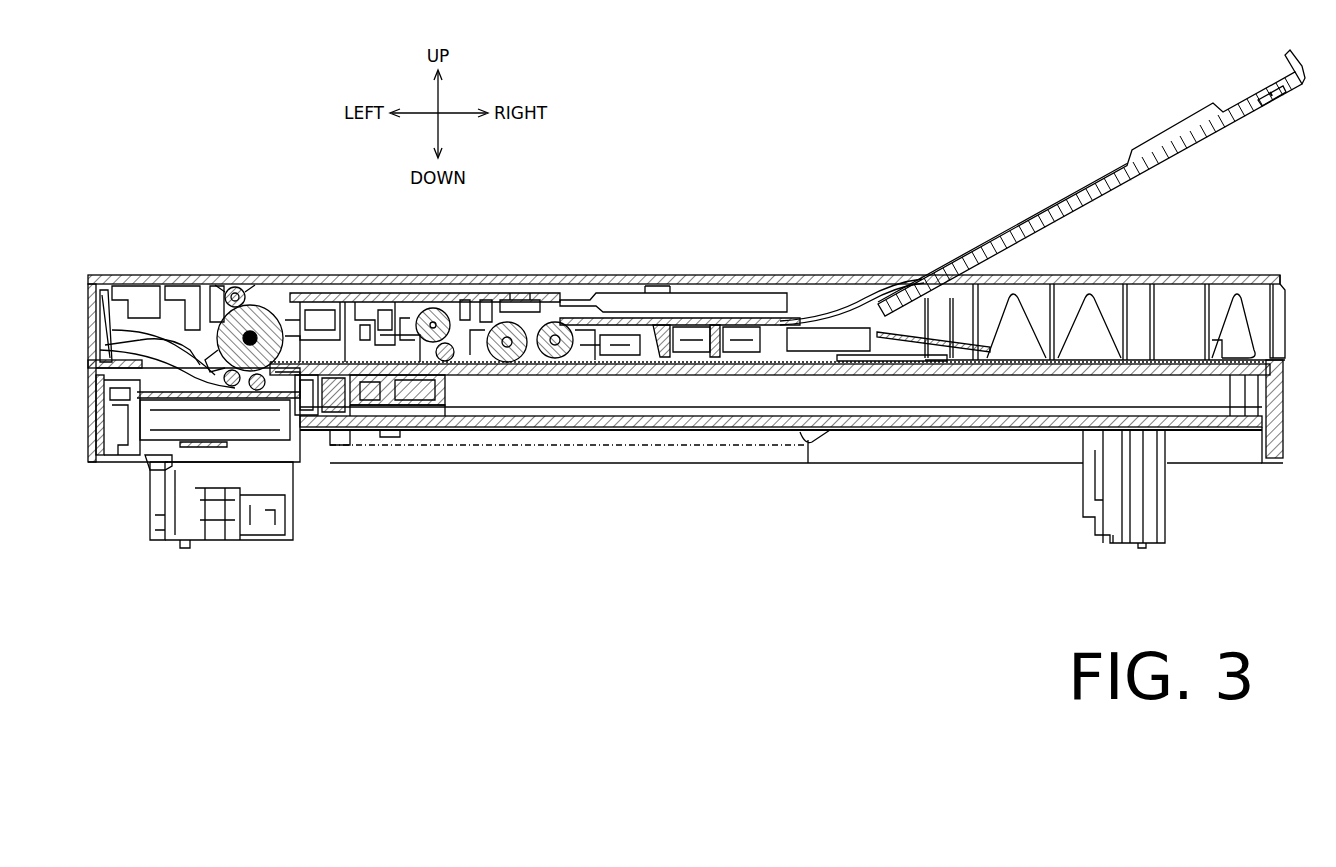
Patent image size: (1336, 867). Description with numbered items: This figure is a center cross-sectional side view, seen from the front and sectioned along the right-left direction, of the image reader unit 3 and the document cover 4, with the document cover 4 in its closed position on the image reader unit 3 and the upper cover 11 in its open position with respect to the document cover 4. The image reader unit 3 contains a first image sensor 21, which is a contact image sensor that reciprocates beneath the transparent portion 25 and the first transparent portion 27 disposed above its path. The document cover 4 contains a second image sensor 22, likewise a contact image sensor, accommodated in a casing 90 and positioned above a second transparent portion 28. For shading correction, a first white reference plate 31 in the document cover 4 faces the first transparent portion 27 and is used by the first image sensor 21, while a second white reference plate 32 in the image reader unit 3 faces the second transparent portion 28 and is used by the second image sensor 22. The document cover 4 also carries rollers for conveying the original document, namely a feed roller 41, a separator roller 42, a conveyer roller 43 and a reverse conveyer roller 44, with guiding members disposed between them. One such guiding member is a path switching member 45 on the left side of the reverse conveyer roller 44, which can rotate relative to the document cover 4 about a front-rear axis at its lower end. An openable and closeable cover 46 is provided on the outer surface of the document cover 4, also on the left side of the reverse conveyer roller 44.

The image reader unit 3 is at (1240, 452).
The document cover 4 is at (1152, 278).
The upper cover 11 is at (1082, 190).
The first image sensor 21 is at (390, 432).
The second image sensor 22 is at (322, 278).
The transparent portion 25 is at (665, 376).
The first transparent portion 27 is at (360, 412).
The second transparent portion 28 is at (336, 412).
The first white reference plate 31 is at (375, 278).
The second white reference plate 32 is at (300, 415).
The feed roller 41 is at (560, 376).
The separator roller 42 is at (506, 376).
The conveyer roller 43 is at (445, 280).
The reverse conveyer roller 44 is at (263, 278).
The path switching member 45 is at (155, 468).
The openable and closeable cover 46 is at (93, 272).
The casing 90 is at (288, 282).